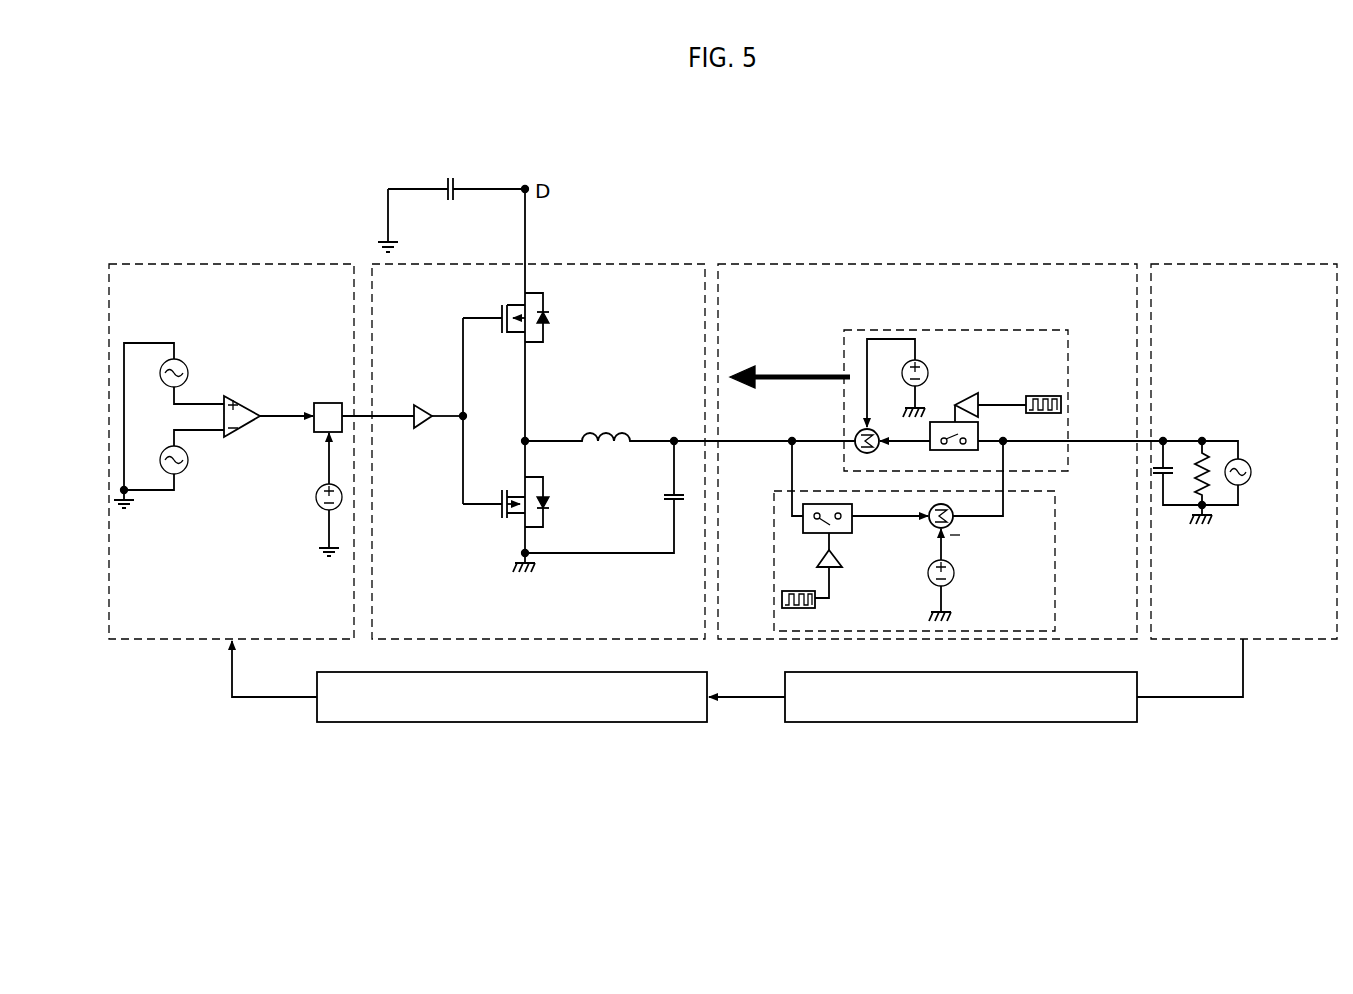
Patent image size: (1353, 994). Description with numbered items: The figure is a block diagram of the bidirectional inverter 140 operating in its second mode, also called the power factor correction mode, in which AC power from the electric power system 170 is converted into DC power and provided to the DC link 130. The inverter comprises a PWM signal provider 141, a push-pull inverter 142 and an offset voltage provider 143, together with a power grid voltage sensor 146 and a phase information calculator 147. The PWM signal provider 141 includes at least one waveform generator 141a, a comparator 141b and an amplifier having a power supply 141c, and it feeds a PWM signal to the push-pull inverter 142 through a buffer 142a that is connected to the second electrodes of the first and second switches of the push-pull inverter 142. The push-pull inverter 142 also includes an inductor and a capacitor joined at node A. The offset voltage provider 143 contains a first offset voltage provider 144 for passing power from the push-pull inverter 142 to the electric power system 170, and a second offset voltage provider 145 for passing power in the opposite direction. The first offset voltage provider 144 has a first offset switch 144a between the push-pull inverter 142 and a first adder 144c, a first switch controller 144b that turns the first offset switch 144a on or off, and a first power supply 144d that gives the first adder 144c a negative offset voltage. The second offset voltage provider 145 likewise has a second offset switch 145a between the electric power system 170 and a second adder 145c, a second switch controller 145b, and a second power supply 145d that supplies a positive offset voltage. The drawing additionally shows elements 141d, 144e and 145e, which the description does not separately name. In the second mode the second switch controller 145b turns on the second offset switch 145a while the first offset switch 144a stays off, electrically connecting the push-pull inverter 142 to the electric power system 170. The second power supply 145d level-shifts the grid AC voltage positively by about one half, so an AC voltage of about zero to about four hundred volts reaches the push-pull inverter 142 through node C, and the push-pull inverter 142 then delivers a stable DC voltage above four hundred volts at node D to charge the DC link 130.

The DC link 130 is at (450, 177).
The bidirectional inverter 140 is at (1118, 190).
The PWM signal provider 141 is at (234, 263).
The waveform generator 141a is at (183, 366).
The comparator 141b is at (248, 403).
The power supply 141c is at (314, 497).
The multiplier 141d is at (326, 402).
The push-pull inverter 142 is at (623, 263).
The buffer 142a is at (427, 431).
The offset voltage provider 143 is at (1012, 263).
The first offset voltage provider 144 is at (1055, 560).
The first offset switch 144a is at (852, 528).
The first switch controller 144b is at (815, 606).
The first adder 144c is at (953, 523).
The first power supply 144d is at (952, 564).
The first buffer 144e is at (840, 557).
The second offset voltage provider 145 is at (1041, 328).
The second offset switch 145a is at (978, 432).
The second switch controller 145b is at (1061, 404).
The second adder 145c is at (856, 438).
The second power supply 145d is at (917, 357).
The second buffer 145e is at (990, 394).
The power grid voltage sensor 146 is at (960, 722).
The phase information calculator 147 is at (512, 722).
The electric power system 170 is at (1244, 263).